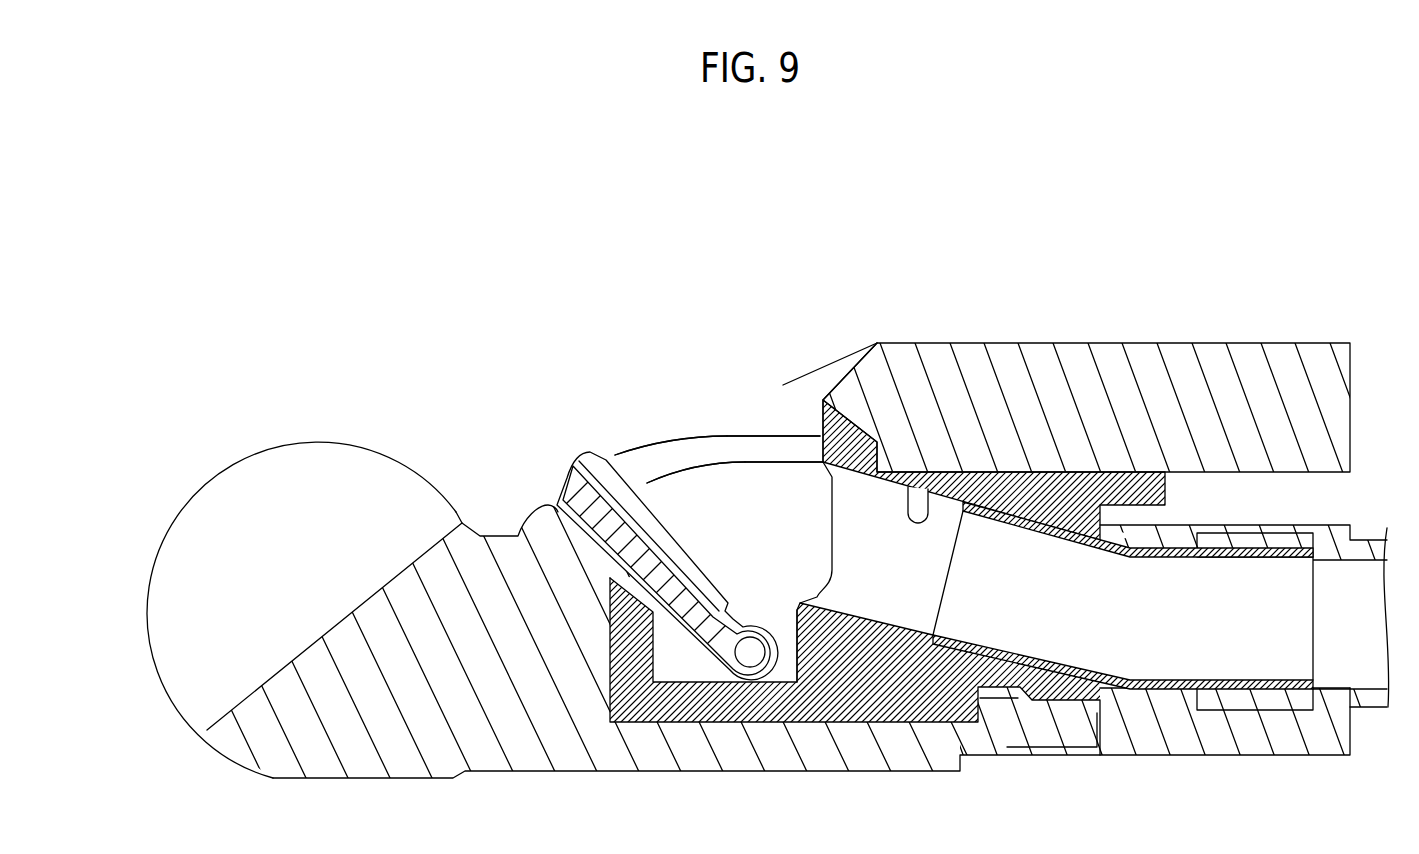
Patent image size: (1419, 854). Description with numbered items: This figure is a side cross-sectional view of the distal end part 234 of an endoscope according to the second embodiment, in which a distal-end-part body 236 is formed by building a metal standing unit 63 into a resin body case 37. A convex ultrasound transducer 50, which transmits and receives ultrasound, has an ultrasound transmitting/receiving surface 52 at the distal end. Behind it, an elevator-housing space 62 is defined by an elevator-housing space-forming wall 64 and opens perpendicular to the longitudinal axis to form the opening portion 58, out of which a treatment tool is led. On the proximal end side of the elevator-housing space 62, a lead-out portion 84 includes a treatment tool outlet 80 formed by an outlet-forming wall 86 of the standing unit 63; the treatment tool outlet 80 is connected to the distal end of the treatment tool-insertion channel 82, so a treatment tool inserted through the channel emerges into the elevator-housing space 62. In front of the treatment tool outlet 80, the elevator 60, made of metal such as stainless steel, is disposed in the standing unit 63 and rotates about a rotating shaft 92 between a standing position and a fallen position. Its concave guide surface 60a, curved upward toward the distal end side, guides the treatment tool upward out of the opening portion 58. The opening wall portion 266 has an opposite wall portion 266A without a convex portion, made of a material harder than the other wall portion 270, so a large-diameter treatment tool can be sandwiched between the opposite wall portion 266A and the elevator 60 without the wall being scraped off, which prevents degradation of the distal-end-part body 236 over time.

The ultrasound transducer 50 is at (118, 597).
The ultrasound transmitting/receiving surface 52 is at (222, 488).
The body case 37 is at (1315, 348).
The opening portion 58 is at (655, 443).
The elevator 60 is at (541, 489).
The guide surface 60a is at (607, 458).
The elevator-housing space 62 is at (741, 480).
The standing unit 63 is at (615, 455).
The elevator-housing space-forming wall 64 is at (748, 473).
The treatment tool outlet 80 is at (832, 538).
The treatment tool-insertion channel 82 is at (1073, 643).
The lead-out portion 84 is at (796, 636).
The outlet-forming wall 86 is at (916, 515).
The rotating shaft 92 is at (753, 657).
The distal end part 234 is at (1262, 286).
The distal-end-part body 236 is at (1154, 331).
The opening wall portion 266 is at (687, 452).
The other wall portion 270 is at (691, 415).
The opposite wall portion 266A is at (802, 389).